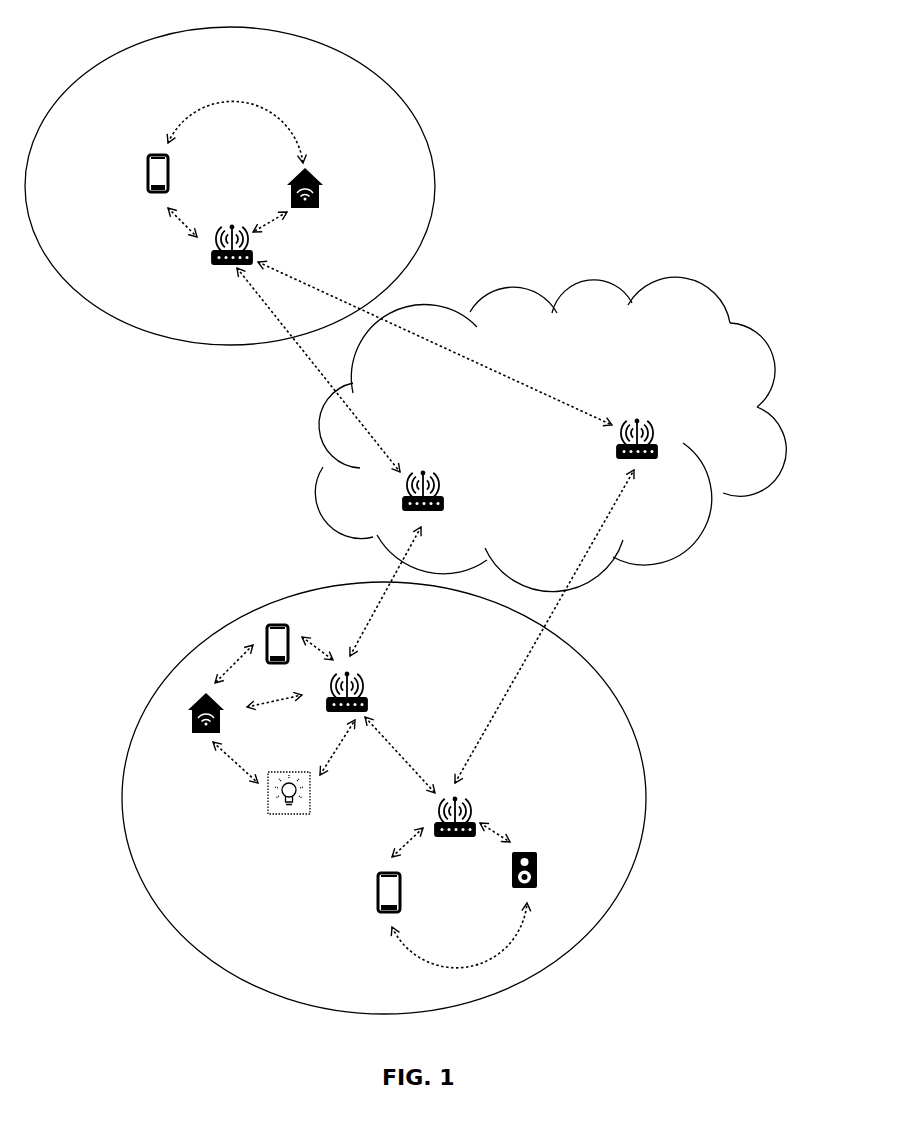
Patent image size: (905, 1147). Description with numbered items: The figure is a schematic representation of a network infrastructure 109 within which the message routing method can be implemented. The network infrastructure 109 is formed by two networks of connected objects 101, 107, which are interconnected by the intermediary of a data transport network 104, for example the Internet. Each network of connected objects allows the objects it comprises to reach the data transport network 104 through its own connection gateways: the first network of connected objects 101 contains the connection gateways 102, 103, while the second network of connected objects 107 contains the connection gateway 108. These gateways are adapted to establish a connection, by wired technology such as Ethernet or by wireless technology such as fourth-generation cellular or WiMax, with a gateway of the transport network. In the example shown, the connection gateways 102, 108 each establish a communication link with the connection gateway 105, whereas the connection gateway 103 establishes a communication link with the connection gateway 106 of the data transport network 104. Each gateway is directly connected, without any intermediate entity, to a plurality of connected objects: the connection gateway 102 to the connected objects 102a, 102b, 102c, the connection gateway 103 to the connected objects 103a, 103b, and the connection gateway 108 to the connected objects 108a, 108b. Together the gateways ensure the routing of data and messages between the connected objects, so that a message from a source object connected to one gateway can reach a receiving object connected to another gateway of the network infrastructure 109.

The network infrastructure 109 is at (678, 71).
The network of connected objects 107 is at (421, 126).
The connection gateway 108 is at (210, 257).
The connected object 108a is at (142, 183).
The connected object 108b is at (320, 202).
The data transport network 104 is at (783, 433).
The connection gateway 105 is at (447, 503).
The connection gateway 106 is at (655, 428).
The network of connected objects 101 is at (647, 802).
The connection gateway 102 is at (367, 683).
The connected object 102a is at (275, 623).
The connected object 102b is at (200, 737).
The connected object 102c is at (277, 815).
The connection gateway 103 is at (473, 807).
The connected object 103a is at (377, 902).
The connected object 103b is at (540, 867).